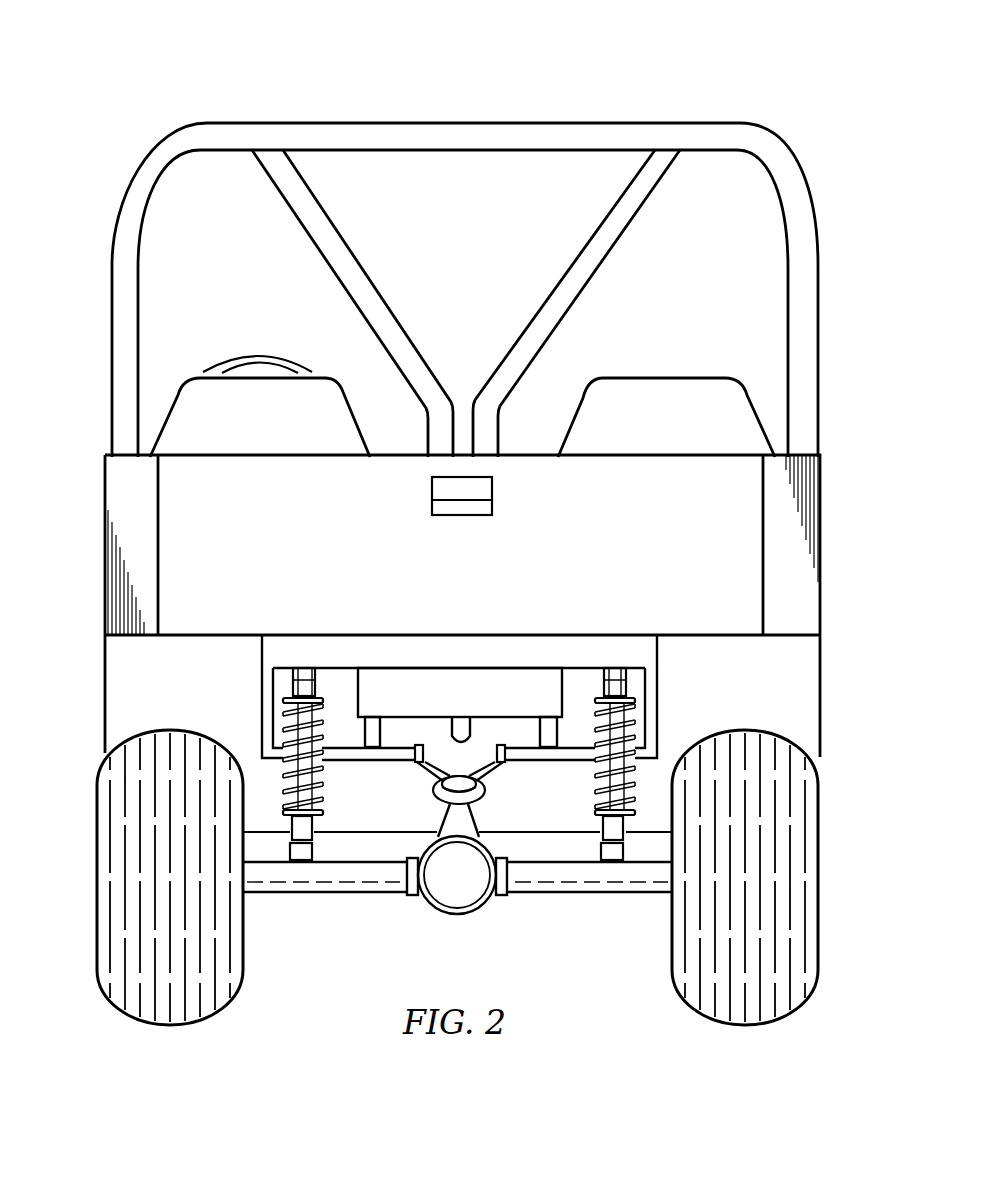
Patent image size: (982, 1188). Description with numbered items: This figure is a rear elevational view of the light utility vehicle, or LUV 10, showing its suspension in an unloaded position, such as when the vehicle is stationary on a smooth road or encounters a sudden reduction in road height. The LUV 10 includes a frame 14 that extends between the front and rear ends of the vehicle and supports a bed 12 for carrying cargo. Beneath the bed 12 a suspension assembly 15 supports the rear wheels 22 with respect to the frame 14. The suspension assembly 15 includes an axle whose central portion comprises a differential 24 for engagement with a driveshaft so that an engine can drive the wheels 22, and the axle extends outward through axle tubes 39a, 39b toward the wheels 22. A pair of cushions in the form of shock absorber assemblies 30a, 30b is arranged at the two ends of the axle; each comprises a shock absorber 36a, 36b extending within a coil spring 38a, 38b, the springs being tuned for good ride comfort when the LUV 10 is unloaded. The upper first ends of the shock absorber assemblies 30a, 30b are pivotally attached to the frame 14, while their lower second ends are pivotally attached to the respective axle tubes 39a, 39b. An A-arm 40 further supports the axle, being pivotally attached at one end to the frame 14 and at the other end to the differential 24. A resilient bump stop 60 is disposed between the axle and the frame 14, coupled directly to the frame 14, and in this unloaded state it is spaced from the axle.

The LUV 10 is at (258, 85).
The bed 12 is at (568, 370).
The frame 14 is at (266, 674).
The suspension assembly 15 is at (365, 958).
The wheels 22 is at (100, 938).
The differential 24 is at (452, 918).
The shock absorber assembly 30a is at (340, 796).
The shock absorber assembly 30b is at (570, 787).
The shock absorber 36a is at (285, 833).
The shock absorber 36b is at (620, 830).
The coil spring 38a is at (292, 718).
The coil spring 38b is at (633, 737).
The axle tube 39a is at (355, 893).
The axle tube 39b is at (562, 893).
The A-arm 40 is at (433, 795).
The bump stop 60 is at (445, 735).